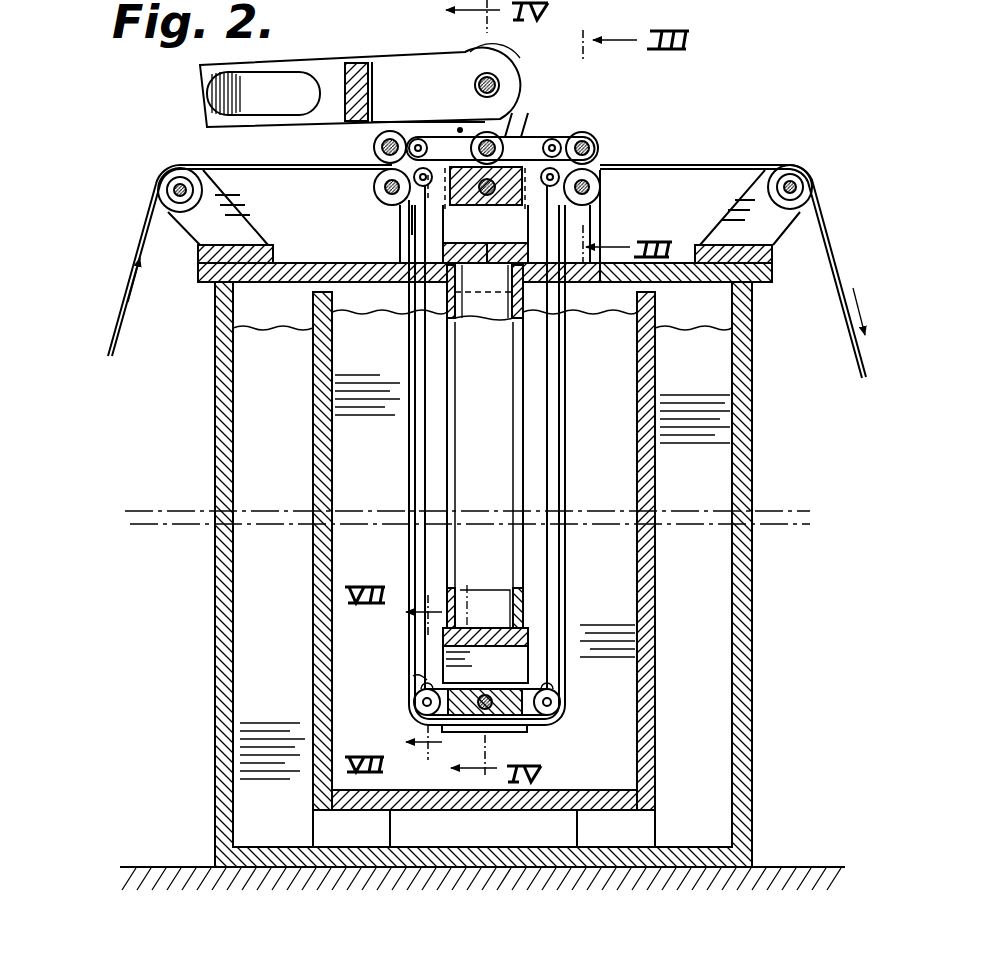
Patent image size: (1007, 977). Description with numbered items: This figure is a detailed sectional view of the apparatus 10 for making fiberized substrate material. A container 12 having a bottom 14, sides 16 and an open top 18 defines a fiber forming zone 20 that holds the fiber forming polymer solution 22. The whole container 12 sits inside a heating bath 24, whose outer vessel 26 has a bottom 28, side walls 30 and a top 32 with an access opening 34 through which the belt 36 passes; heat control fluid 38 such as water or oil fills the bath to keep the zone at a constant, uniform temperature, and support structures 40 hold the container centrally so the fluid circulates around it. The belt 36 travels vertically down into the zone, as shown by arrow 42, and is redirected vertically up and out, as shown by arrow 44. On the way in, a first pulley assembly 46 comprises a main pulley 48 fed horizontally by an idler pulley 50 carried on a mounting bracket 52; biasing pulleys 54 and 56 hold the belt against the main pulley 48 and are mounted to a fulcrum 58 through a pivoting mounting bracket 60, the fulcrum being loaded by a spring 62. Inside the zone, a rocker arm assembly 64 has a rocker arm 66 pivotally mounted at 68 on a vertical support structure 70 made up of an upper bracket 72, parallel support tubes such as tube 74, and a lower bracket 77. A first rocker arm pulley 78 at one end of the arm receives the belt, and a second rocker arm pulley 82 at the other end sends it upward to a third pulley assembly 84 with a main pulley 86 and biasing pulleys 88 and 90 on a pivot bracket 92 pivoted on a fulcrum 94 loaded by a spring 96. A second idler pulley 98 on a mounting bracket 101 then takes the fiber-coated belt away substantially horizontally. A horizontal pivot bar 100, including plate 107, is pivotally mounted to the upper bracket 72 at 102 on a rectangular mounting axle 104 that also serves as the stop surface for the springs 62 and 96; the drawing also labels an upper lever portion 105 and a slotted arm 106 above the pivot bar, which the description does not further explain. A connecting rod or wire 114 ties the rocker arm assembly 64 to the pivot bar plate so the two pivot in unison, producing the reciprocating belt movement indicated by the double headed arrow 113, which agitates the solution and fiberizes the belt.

The apparatus 10 is at (688, 83).
The container 12 is at (655, 718).
The bottom 14 is at (528, 812).
The sides 16 is at (660, 480).
The open top 18 is at (313, 257).
The fiber forming zone 20 is at (362, 552).
The fiber forming polymer solution 22 is at (735, 378).
The heating bath 24 is at (755, 648).
The outer vessel 26 is at (755, 770).
The bottom 28 is at (455, 847).
The side walls 30 is at (212, 672).
The top 32 is at (290, 278).
The access opening 34 is at (383, 280).
The belt 36 is at (128, 336).
The heat control fluid 38 is at (262, 408).
The support structures 40 is at (352, 828).
The arrow 42 is at (392, 412).
The arrow 44 is at (573, 398).
The first pulley assembly 46 is at (357, 135).
The main pulley 48 is at (374, 187).
The idler pulley 50 is at (170, 185).
The mounting bracket 52 is at (205, 252).
The biasing pulley 54 is at (390, 132).
The biasing pulley 56 is at (405, 205).
The fulcrum 58 is at (471, 200).
The pivoting mounting bracket 60 is at (418, 138).
The spring 62 is at (460, 128).
The rocker arm assembly 64 is at (550, 735).
The rocker arm 66 is at (412, 704).
The pivot mounting 68 is at (486, 700).
The vertical support structure 70 is at (442, 379).
The upper bracket 72 is at (520, 230).
The support tube 74 is at (484, 455).
The lower bracket 77 is at (472, 622).
The first rocker arm pulley 78 is at (419, 690).
The second rocker arm pulley 82 is at (562, 700).
The third pulley assembly 84 is at (617, 142).
The main pulley 86 is at (600, 206).
The biasing pulley 88 is at (591, 134).
The biasing pulley 90 is at (602, 187).
The pivot bracket 92 is at (566, 136).
The fulcrum 94 is at (531, 140).
The spring 96 is at (518, 78).
The second idler pulley 98 is at (800, 172).
The horizontal pivot bar 100 is at (372, 158).
The mounting bracket 101 is at (790, 240).
The pivot mounting 102 is at (485, 291).
The rectangular mounting axle 104 is at (570, 216).
The arm 105 is at (472, 48).
The handle 106 is at (212, 92).
The plate 107 is at (620, 154).
The double headed arrow 113 is at (577, 541).
The connecting rod 114 is at (540, 458).